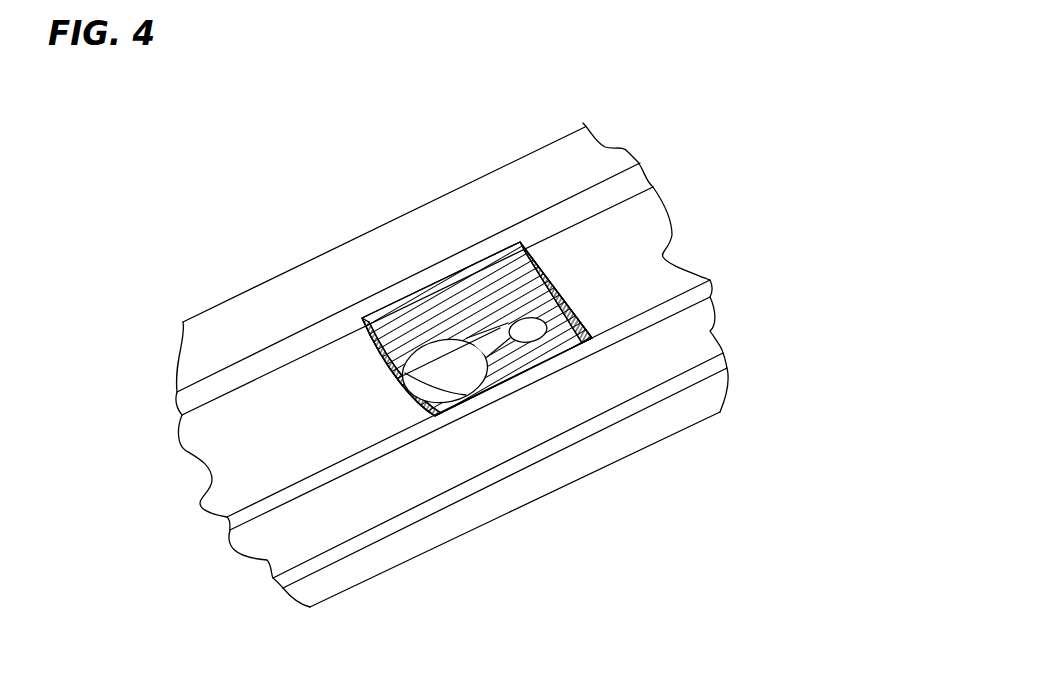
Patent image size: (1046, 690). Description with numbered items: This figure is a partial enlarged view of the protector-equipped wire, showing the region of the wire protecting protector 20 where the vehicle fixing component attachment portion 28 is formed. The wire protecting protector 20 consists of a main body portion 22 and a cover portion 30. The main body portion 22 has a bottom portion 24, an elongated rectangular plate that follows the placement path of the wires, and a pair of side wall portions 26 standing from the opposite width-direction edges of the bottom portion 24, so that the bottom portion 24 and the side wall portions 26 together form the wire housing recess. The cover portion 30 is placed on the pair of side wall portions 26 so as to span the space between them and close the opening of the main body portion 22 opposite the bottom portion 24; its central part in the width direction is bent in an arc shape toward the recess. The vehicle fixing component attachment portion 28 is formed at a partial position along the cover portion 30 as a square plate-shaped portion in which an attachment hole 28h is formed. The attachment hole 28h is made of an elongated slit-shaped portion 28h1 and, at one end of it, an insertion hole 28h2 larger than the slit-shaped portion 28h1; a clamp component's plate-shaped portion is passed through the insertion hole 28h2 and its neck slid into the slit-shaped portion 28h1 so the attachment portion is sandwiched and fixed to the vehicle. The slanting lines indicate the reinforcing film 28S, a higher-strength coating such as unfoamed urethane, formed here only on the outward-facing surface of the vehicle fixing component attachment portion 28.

The wire protecting protector 20 is at (478, 356).
The main body portion 22 is at (711, 331).
The bottom portion 24 is at (663, 257).
The side wall portions 26 is at (607, 458).
The vehicle fixing component attachment portion 28 is at (475, 387).
The reinforcing film 28S is at (452, 295).
The attachment hole 28h is at (504, 464).
The slit-shaped portion 28h1 is at (537, 350).
The insertion hole 28h2 is at (465, 400).
The cover portion 30 is at (680, 437).